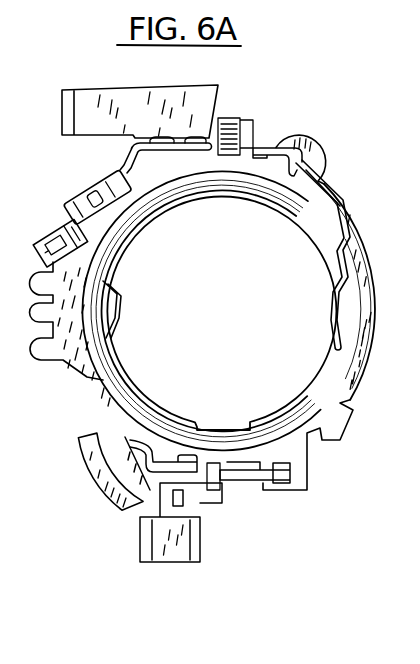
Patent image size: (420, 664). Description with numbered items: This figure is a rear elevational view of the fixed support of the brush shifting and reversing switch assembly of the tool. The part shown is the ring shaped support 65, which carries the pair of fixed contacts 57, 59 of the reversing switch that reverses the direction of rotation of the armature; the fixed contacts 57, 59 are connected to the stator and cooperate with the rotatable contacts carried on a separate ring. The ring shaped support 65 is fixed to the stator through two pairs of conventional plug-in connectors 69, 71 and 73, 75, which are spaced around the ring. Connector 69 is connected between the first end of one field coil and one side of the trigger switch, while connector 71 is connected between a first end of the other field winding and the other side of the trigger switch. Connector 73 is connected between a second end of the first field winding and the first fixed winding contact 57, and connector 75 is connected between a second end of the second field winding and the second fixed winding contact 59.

The fixed contact 57 is at (333, 318).
The fixed contact 59 is at (119, 307).
The ring shaped support 65 is at (107, 225).
The plug-in connector 69 is at (192, 147).
The plug-in connector 71 is at (262, 481).
The plug-in connector 73 is at (272, 146).
The plug-in connector 75 is at (152, 492).